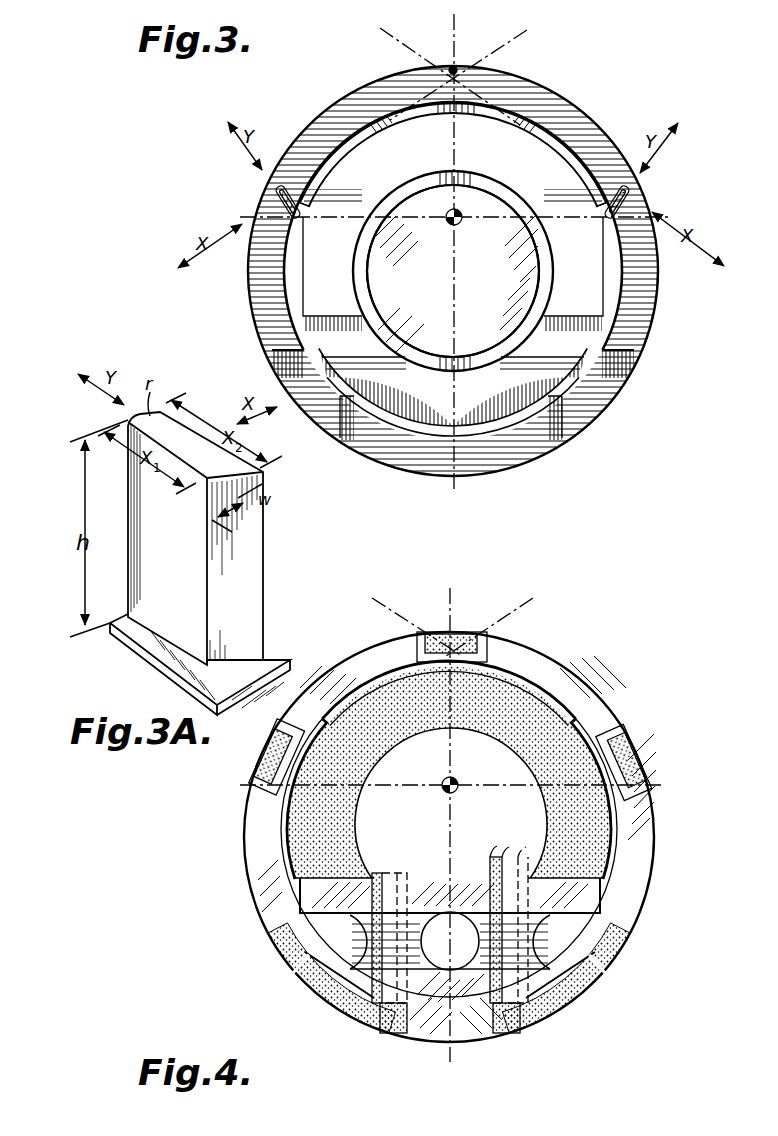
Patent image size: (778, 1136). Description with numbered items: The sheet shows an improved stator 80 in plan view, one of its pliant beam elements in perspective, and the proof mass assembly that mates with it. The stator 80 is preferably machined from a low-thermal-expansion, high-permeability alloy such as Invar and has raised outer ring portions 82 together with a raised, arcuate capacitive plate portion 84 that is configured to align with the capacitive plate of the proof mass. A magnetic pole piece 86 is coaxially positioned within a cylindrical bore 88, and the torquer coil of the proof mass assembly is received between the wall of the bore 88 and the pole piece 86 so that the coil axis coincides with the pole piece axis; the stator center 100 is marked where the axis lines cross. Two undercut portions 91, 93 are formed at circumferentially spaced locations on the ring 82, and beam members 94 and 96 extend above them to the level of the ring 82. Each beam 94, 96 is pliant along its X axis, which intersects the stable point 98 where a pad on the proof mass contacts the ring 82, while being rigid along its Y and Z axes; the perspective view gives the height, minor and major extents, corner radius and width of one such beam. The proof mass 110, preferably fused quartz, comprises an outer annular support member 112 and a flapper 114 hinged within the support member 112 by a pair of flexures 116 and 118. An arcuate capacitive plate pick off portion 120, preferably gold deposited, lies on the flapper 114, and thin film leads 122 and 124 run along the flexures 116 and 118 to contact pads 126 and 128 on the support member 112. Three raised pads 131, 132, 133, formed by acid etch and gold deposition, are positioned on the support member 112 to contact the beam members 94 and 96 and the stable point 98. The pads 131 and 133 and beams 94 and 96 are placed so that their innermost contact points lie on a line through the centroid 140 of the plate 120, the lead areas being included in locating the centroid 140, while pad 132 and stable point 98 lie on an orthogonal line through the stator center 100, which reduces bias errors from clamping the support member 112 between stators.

In FIG. 3, the stator 80 is at (563, 97).
In FIG. 3, the raised outer ring portion 82 is at (583, 132).
In FIG. 3, the raised capacitive plate portion 84 is at (508, 153).
In FIG. 3, the magnetic pole piece 86 is at (380, 333).
In FIG. 3, the cylindrical bore 88 is at (393, 305).
In FIG. 3, the undercut portion 91 is at (302, 172).
In FIG. 3, the undercut portion 93 is at (612, 246).
In FIG. 3, the beam member 94 is at (280, 198).
In FIG. 3, the beam member 96 is at (632, 200).
In FIG. 3, the stable point 98 is at (453, 66).
In FIG. 3, the center axis 100 is at (450, 226).
In FIG. 4, the proof mass 110 is at (584, 700).
In FIG. 4, the outer annular support member 112 is at (328, 685).
In FIG. 4, the flapper 114 is at (540, 692).
In FIG. 4, the capacitive plate pick off portion 120 is at (566, 730).
In FIG. 4, the thin film lead 122 is at (380, 950).
In FIG. 4, the thin film lead 124 is at (507, 969).
In FIG. 4, the contact pad 126 is at (292, 953).
In FIG. 4, the contact pad 128 is at (604, 953).
In FIG. 4, the raised pad 131 is at (272, 762).
In FIG. 4, the raised pad 132 is at (456, 634).
In FIG. 4, the raised pad 133 is at (634, 762).
In FIG. 4, the centroid 140 is at (454, 792).
In FIG. 4, the flexure 116 is at (310, 906).
In FIG. 4, the flexure 118 is at (590, 906).